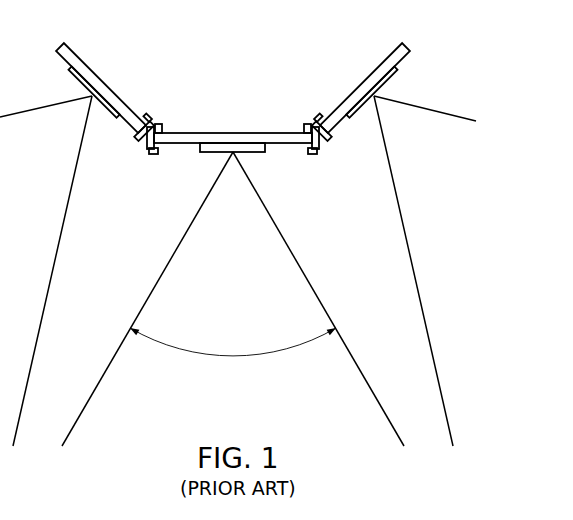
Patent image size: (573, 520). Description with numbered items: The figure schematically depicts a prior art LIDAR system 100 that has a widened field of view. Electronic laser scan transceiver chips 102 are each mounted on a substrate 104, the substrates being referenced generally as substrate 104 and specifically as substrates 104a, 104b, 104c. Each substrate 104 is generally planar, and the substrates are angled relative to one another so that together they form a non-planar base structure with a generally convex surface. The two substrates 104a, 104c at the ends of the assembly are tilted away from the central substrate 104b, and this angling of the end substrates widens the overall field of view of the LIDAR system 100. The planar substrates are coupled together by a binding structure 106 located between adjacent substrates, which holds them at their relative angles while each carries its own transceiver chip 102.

The LIDAR system 100 is at (459, 49).
The electronic laser scan transceiver chip 102 is at (70, 76).
The substrate 104 is at (234, 79).
The substrate 104a is at (82, 61).
The substrate 104b is at (225, 133).
The substrate 104c is at (384, 61).
The binding structure 106 is at (158, 109).